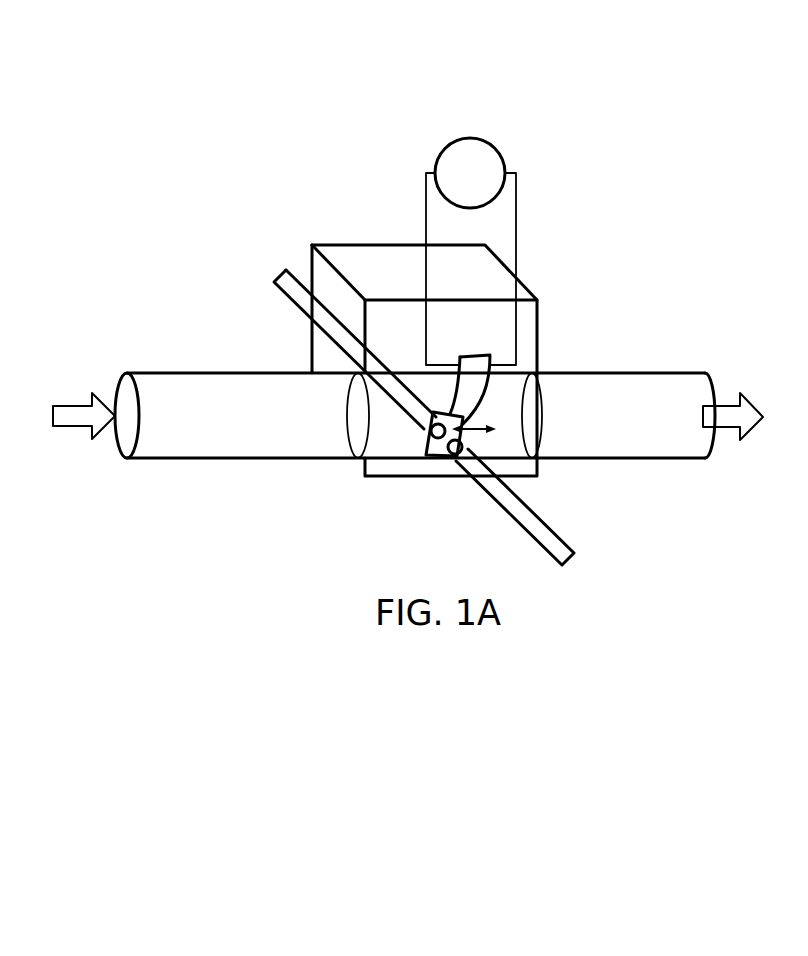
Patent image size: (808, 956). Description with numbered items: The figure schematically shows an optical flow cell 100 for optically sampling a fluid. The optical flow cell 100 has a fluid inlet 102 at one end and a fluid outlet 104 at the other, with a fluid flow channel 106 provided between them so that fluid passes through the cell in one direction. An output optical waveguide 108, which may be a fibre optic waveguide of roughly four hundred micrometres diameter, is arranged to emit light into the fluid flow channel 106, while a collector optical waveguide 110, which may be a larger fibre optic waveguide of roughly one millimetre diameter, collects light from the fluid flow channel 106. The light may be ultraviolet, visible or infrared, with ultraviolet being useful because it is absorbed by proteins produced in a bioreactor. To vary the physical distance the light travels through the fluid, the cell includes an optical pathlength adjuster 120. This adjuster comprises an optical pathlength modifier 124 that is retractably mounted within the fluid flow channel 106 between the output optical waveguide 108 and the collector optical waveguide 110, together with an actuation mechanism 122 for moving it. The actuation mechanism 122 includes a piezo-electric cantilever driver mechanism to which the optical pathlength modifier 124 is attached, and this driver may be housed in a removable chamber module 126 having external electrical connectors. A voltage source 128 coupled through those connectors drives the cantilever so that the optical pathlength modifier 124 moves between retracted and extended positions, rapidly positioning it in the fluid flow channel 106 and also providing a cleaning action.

The optical flow cell 100 is at (356, 104).
The fluid inlet 102 is at (120, 381).
The fluid outlet 104 is at (716, 381).
The fluid flow channel 106 is at (116, 437).
The output optical waveguide 108 is at (300, 293).
The collector optical waveguide 110 is at (547, 538).
The optical pathlength adjuster 120 is at (420, 492).
The actuation mechanism 122 is at (478, 383).
The optical pathlength modifier 124 is at (445, 456).
The removable chamber module 126 is at (362, 446).
The voltage source 128 is at (503, 155).